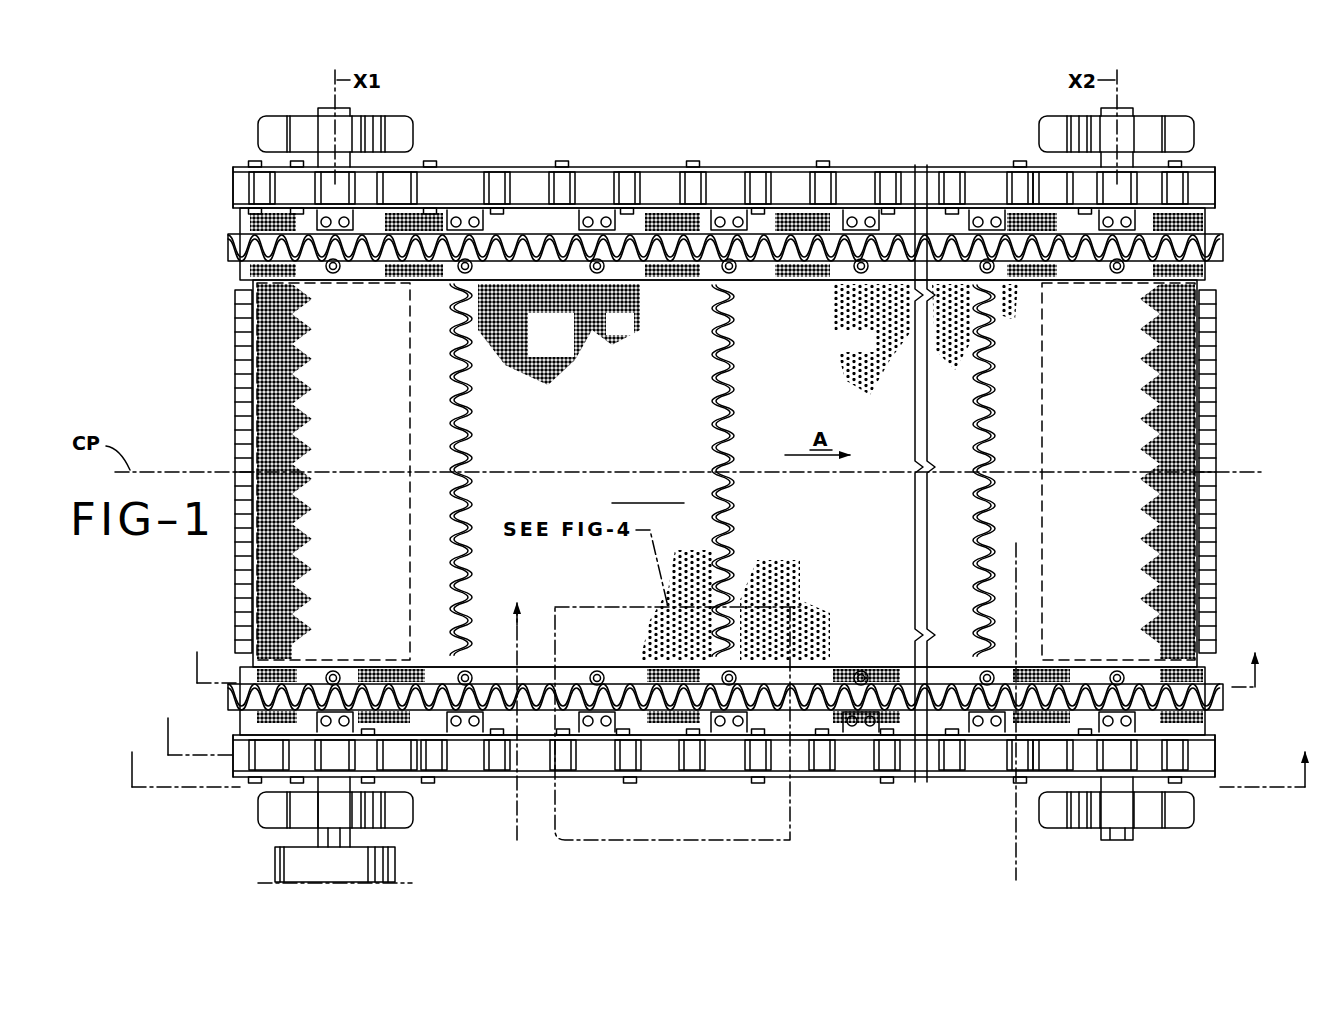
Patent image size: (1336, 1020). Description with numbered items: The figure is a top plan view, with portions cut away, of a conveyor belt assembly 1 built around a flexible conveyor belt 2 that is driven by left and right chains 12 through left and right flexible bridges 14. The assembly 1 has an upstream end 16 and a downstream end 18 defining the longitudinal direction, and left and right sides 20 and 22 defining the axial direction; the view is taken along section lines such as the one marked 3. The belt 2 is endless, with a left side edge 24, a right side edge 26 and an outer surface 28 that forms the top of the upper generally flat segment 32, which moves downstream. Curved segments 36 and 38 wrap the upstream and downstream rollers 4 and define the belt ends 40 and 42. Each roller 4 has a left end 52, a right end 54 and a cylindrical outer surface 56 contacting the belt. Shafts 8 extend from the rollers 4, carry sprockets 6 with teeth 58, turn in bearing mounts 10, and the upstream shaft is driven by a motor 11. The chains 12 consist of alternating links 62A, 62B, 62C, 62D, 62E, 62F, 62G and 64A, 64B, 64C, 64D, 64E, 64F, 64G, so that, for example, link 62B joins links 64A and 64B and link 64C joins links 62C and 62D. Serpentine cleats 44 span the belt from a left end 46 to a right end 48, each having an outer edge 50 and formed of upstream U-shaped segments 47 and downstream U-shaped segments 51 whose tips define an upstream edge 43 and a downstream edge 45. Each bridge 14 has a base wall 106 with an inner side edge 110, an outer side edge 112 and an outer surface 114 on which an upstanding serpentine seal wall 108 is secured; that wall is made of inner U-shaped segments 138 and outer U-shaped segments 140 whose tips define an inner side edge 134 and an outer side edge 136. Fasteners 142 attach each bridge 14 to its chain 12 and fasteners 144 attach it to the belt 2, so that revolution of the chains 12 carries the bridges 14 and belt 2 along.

The conveyor belt assembly 1 is at (188, 264).
The flexible conveyor belt 2 is at (325, 542).
The section line 3- 3 is at (342, 710).
The rollers 4 is at (722, 437).
The sprockets 6 is at (712, 510).
The shafts 8 is at (330, 108).
The bearing mounts 10 is at (280, 118).
The motor 11 is at (395, 866).
The chains 12 is at (592, 166).
The flexible bridges 14 is at (806, 282).
The upstream end 16 is at (186, 471).
The downstream end 18 is at (1252, 471).
The left side 20 is at (876, 106).
The right side 22 is at (932, 838).
The left side edge 24 is at (618, 264).
The right side edge 26 is at (550, 615).
The outer surface 28 is at (648, 493).
The upper segment 32 is at (648, 493).
The upstream end curved segment 36 is at (186, 471).
The downstream end curved segment 38 is at (1249, 471).
The upstream end of belt 40 is at (246, 402).
The downstream end of belt 42 is at (1207, 402).
The upstream edge 43 is at (452, 495).
The cleats 44 is at (452, 410).
The downstream edge 45 is at (478, 436).
The left end of cleat 46 is at (456, 290).
The upstream U-shaped segments 47 is at (454, 365).
The right end of cleat 48 is at (440, 657).
The outer edge of cleat 50 is at (470, 470).
The downstream U-shaped segments 51 is at (470, 402).
The left end of roller 52 is at (300, 285).
The right end of roller 54 is at (300, 657).
The cylindrical outer surface 56 is at (320, 445).
The teeth 58 is at (232, 184).
The chain link 62A is at (325, 167).
The chain link 62B is at (455, 167).
The chain link 62C is at (580, 778).
The chain link 62D is at (718, 167).
The chain link 62E is at (835, 167).
The chain link 62F is at (978, 167).
The chain link 62G is at (1125, 163).
The chain link 64A is at (395, 167).
The chain link 64B is at (540, 170).
The chain link 64C is at (663, 170).
The chain link 64D is at (798, 170).
The chain link 64E is at (907, 167).
The chain link 64F is at (1052, 192).
The chain link 64G is at (1175, 166).
The base wall 106 is at (695, 481).
The upstanding seal wall 108 is at (815, 476).
The inner side edge of bridge 110 is at (775, 274).
The outer side edge of bridge 112 is at (768, 160).
The outer surface of bridge 114 is at (660, 295).
The inner side edge of seal wall 134 is at (552, 264).
The outer side edge of seal wall 136 is at (520, 235).
The inner U-shaped segments 138 is at (847, 275).
The outer U-shaped segments 140 is at (632, 237).
The fasteners 142 is at (470, 735).
The fasteners 144 is at (333, 671).